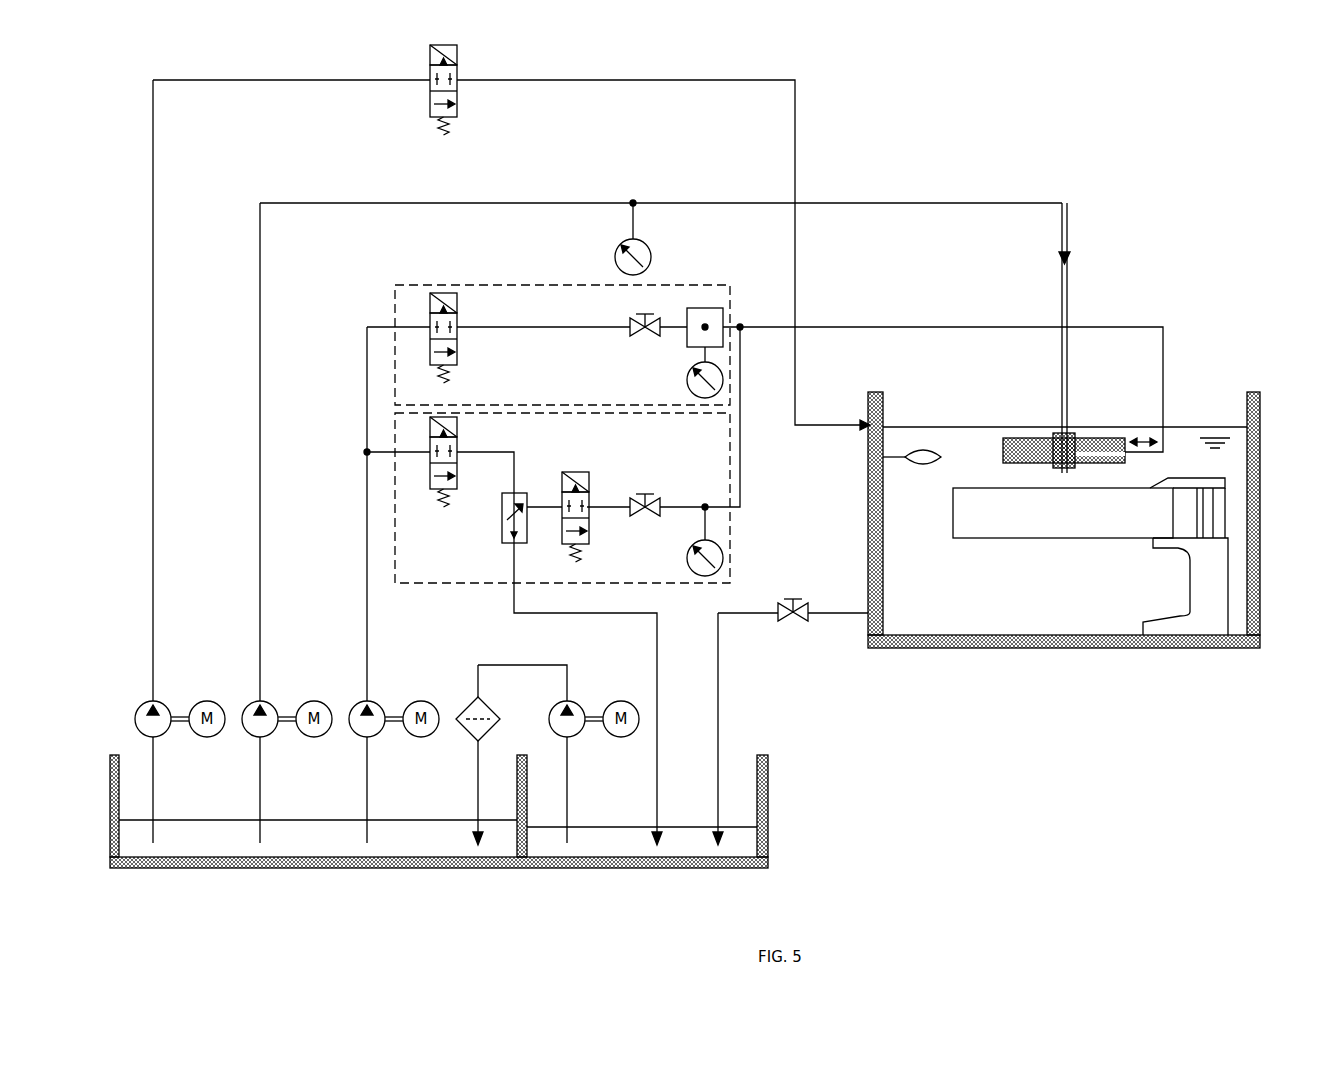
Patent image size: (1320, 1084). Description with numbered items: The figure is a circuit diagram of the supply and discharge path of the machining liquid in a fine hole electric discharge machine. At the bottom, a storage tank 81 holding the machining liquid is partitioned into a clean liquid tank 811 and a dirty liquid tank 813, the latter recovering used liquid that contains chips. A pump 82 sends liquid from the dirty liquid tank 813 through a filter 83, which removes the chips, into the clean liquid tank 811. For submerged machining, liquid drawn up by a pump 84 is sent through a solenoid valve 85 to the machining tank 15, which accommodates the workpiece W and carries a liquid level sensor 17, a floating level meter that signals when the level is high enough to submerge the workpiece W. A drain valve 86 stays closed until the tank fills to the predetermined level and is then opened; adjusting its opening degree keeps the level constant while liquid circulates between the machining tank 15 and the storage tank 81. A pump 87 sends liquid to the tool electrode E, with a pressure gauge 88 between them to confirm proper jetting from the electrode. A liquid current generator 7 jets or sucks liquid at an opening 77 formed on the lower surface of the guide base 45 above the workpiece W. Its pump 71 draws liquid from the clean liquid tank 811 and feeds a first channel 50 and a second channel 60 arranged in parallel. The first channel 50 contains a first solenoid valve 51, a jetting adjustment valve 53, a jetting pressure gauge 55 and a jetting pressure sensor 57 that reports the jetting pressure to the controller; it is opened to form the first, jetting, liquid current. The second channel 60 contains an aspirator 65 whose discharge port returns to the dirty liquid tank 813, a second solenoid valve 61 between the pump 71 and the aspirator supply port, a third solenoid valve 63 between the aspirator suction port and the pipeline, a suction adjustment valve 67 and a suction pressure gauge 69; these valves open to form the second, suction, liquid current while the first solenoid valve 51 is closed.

The solenoid valve 85 is at (459, 68).
The pressure gauge 88 is at (614, 254).
The first channel 50 is at (410, 285).
The first solenoid valve 51 is at (459, 316).
The jetting adjustment valve 53 is at (628, 338).
The jetting pressure sensor 57 is at (702, 308).
The jetting pressure gauge 55 is at (688, 370).
The second channel 60 is at (450, 585).
The second solenoid valve 61 is at (459, 442).
The aspirator 65 is at (500, 531).
The third solenoid valve 63 is at (589, 497).
The suction adjustment valve 67 is at (655, 492).
The suction pressure gauge 69 is at (687, 556).
The liquid current generator 7 is at (333, 330).
The drain valve 86 is at (784, 598).
The machining tank 15 is at (935, 648).
The liquid level sensor 17 is at (925, 445).
The guide base 45 is at (1017, 436).
The tool electrode E is at (1069, 282).
The opening 77 is at (1078, 466).
The workpiece W is at (1012, 530).
The pump 84 is at (163, 706).
The pump 87 is at (270, 706).
The pump 71 is at (377, 706).
The filter 83 is at (490, 708).
The pump 82 is at (577, 706).
The storage tank 81 is at (810, 783).
The clean liquid tank 811 is at (425, 870).
The dirty liquid tank 813 is at (673, 870).